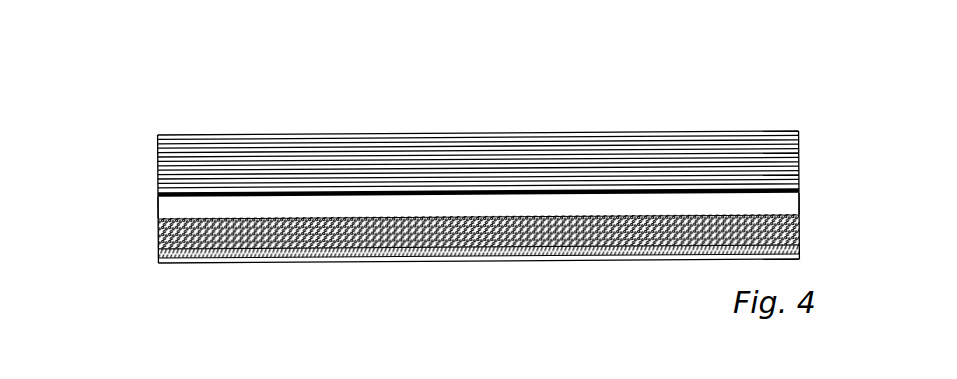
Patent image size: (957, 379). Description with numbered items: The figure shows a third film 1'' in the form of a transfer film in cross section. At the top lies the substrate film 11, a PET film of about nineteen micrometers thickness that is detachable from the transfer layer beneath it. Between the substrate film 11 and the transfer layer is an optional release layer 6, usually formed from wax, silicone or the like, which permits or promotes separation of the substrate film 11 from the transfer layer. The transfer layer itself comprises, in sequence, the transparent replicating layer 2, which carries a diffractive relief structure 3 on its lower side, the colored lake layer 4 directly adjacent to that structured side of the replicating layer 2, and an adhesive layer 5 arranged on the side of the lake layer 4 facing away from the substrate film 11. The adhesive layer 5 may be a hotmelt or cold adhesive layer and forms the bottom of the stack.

The third film 1'' is at (474, 142).
The substrate film 11 is at (166, 164).
The release layer 6 is at (160, 197).
The replicating layer 2 is at (170, 210).
The diffractive relief structure 3 is at (316, 218).
The lake layer 4 is at (160, 246).
The adhesive layer 5 is at (247, 257).